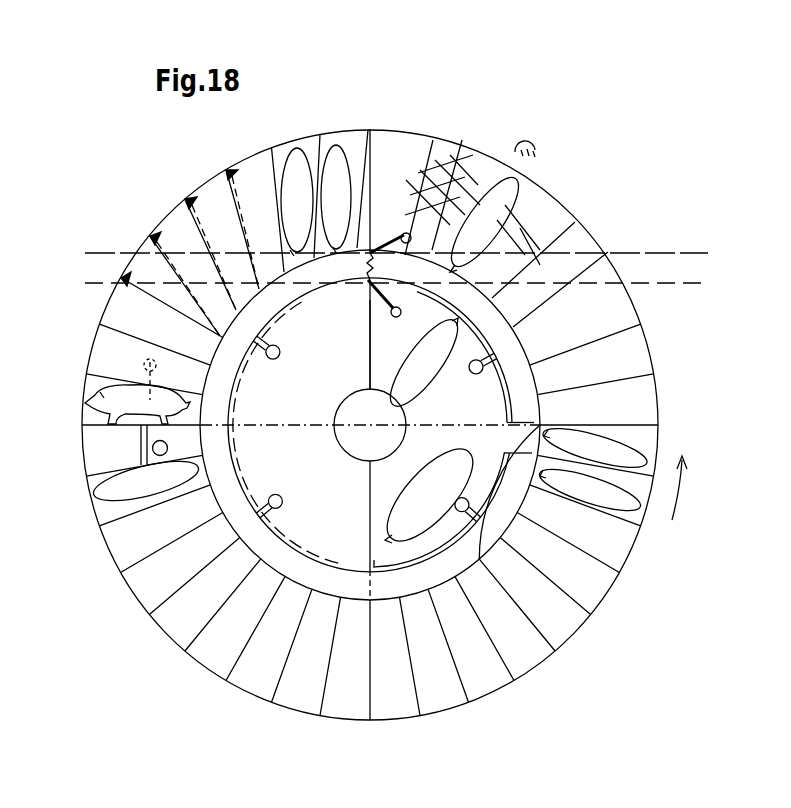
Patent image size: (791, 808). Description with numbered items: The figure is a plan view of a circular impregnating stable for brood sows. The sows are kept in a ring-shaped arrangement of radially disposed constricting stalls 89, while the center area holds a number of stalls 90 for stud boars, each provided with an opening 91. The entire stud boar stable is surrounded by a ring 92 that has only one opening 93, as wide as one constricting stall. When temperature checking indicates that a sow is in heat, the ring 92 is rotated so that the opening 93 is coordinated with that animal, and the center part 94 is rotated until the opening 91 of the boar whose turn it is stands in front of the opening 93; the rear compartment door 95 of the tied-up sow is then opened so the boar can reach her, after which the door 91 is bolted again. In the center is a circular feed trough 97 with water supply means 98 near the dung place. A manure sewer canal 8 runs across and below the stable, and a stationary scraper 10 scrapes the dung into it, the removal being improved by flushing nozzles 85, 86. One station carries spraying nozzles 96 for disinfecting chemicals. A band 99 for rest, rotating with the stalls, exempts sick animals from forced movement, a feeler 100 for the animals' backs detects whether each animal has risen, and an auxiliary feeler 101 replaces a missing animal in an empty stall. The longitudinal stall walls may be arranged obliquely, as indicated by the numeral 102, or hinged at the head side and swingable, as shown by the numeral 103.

The manure sewer canal 8 is at (650, 268).
The stationary scraper 10 is at (393, 230).
The flushing nozzle 85 is at (403, 300).
The flushing nozzle 86 is at (412, 232).
The constricting stall 89 is at (547, 212).
The stud boar stall 90 is at (258, 472).
The opening 91 is at (347, 563).
The ring 92 is at (480, 562).
The opening 93 is at (527, 450).
The center part 94 is at (370, 345).
The rear compartment door 95 is at (540, 447).
The spraying nozzle 96 is at (536, 148).
The circular feed trough 97 is at (358, 440).
The water supply means 98 is at (268, 504).
The band for rest 99 is at (437, 230).
The feeler 100 is at (147, 362).
The auxiliary feeler 101 is at (141, 440).
The oblique longitudinal wall 102 is at (343, 147).
The swingable longitudinal wall 103 is at (188, 202).